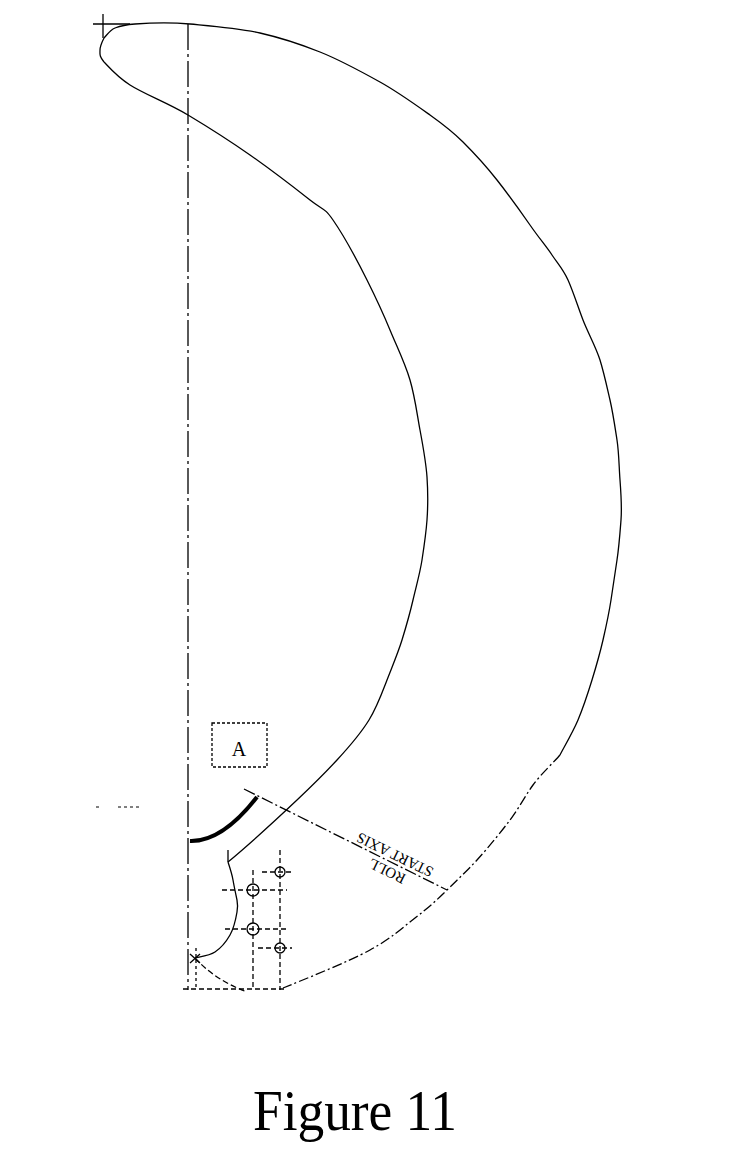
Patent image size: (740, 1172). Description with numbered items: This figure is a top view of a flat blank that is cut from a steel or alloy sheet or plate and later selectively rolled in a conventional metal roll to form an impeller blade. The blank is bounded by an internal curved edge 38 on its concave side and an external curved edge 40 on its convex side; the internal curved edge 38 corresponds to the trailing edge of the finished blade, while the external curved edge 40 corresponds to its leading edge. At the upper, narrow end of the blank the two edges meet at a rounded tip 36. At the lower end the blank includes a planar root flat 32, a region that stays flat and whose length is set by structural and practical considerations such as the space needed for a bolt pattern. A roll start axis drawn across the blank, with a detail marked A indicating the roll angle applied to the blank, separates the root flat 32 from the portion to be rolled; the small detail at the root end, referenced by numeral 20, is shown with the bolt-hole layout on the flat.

The roll mandrel / sheet metal blank detail 20 is at (257, 951).
The planar root flat 32 is at (378, 913).
The tip 36 is at (107, 80).
The internal curved edge 38 is at (415, 428).
The external curved edge 40 is at (567, 260).